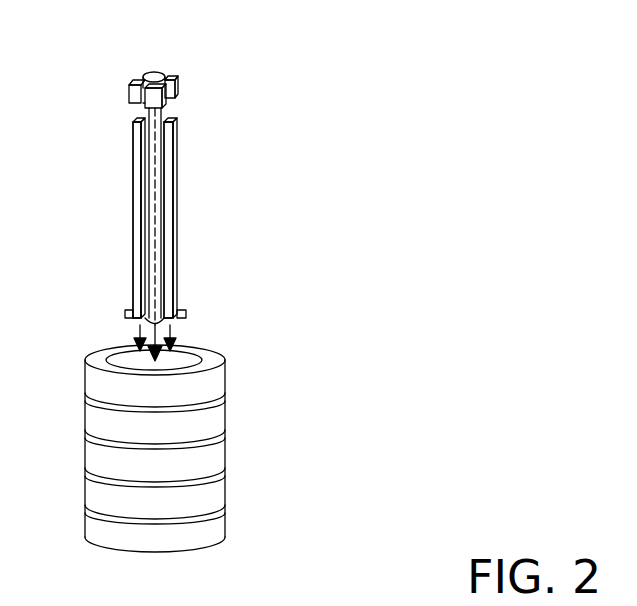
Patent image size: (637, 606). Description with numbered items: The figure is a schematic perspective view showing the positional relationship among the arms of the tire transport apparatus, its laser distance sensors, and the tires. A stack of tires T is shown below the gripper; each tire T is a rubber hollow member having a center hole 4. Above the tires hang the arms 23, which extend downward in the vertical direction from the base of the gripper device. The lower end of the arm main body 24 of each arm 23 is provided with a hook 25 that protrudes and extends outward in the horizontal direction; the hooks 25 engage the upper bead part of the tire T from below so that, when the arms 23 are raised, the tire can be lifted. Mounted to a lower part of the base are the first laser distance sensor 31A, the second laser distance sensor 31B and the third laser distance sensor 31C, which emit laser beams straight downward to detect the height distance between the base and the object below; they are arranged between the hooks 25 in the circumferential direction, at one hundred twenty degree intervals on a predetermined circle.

The first laser distance sensor 31A is at (177, 79).
The second laser distance sensor 31B is at (151, 96).
The third laser distance sensor 31C is at (129, 93).
The arm 23 is at (128, 143).
The arm main body 24 is at (138, 212).
The hook 25 is at (125, 312).
The center hole 4 is at (183, 359).
The tire T is at (213, 425).